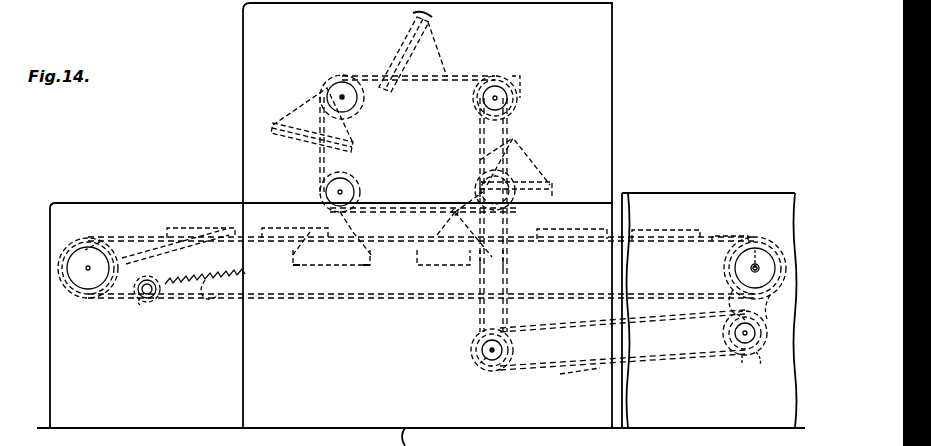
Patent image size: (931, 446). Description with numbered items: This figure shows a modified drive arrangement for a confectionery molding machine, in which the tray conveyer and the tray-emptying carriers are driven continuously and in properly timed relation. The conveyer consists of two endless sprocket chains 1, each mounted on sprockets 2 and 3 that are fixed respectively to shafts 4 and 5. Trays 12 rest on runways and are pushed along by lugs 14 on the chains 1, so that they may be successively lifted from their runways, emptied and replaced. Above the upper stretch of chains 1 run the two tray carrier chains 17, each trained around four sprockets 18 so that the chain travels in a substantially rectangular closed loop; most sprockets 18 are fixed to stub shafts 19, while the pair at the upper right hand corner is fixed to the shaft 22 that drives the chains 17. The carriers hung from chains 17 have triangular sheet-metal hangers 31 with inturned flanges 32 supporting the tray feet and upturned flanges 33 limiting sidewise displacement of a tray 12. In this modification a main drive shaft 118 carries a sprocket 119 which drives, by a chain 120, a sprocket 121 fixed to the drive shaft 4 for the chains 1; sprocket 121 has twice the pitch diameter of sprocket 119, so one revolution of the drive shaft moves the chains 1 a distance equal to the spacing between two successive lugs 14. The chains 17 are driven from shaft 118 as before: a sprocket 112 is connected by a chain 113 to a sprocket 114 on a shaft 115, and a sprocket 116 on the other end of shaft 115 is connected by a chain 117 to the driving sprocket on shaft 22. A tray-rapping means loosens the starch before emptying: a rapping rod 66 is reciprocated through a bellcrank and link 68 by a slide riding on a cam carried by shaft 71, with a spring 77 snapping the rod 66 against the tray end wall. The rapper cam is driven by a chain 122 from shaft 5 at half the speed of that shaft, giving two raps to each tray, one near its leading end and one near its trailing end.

The endless sprocket chains 1 is at (711, 233).
The sprocket 2 is at (765, 250).
The sprocket 3 is at (101, 243).
The shaft 4 is at (754, 262).
The shaft 5 is at (86, 268).
The trays 12 is at (398, 36).
The lugs 14 is at (167, 232).
The endless sprocket chains 17 is at (518, 123).
The sprockets 18 is at (346, 78).
The stub shaft 19 is at (360, 108).
The shaft 22 is at (480, 103).
The hangers 31 is at (447, 45).
The inturned flanges 32 is at (272, 144).
The flanges 33 is at (270, 128).
The rapping rod 66 is at (230, 232).
The link 68 is at (202, 268).
The shaft 71 is at (147, 308).
The spring 77 is at (206, 302).
The sprocket 112 is at (744, 357).
The chain 113 is at (582, 366).
The sprocket 114 is at (500, 349).
The shaft 115 is at (480, 369).
The sprocket 116 is at (474, 352).
The chain 117 is at (508, 268).
The main drive shaft 118 is at (728, 341).
The sprocket 119 is at (751, 362).
The chain 120 is at (733, 308).
The sprocket 121 is at (740, 267).
The chain 122 is at (127, 265).